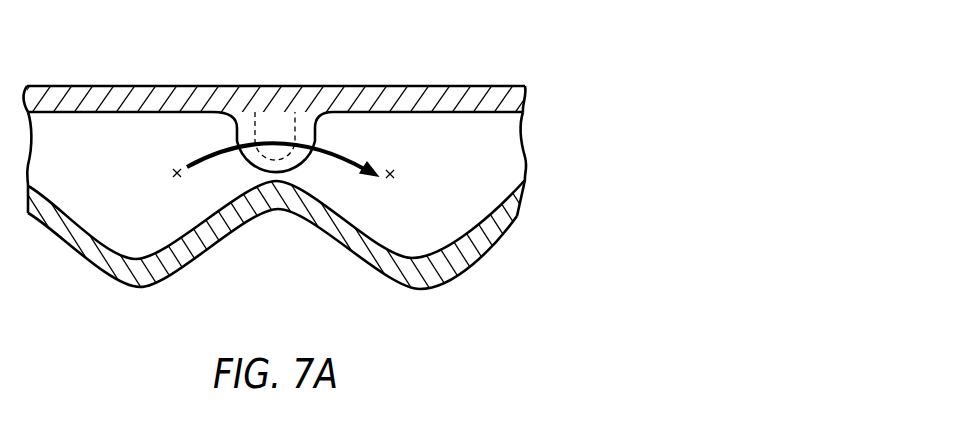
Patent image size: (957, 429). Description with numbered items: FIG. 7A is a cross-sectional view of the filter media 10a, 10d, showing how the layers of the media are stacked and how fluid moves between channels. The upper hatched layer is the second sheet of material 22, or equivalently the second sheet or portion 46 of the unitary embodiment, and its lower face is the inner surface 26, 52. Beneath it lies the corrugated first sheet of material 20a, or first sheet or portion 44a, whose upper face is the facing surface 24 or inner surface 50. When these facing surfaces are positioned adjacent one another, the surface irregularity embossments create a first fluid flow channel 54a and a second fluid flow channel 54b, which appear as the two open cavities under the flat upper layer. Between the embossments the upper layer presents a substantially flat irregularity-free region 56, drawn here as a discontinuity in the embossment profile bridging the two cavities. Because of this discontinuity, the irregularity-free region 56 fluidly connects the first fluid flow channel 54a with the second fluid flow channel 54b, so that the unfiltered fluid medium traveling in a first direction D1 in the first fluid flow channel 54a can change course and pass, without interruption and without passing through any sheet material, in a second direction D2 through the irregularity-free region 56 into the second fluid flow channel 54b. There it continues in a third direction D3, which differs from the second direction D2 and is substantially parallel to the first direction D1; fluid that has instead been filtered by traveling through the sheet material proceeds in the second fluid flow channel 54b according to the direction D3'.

The filter media 10a is at (328, 168).
The filter media 10d is at (457, 47).
The second sheet of material 22 is at (326, 96).
The second sheet or portion 46 is at (508, 100).
The inner surface 26 is at (321, 133).
The inner surface 52 is at (499, 113).
The facing surface 24 is at (320, 210).
The inner surface 50 is at (505, 196).
The first sheet of material 20a is at (328, 235).
The first sheet or portion 44a is at (510, 204).
The irregularity-free region 56 is at (333, 77).
The first fluid flow channel 54a is at (109, 179).
The second fluid flow channel 54b is at (454, 179).
The first direction D1 is at (177, 173).
The second direction D2 is at (282, 153).
The third direction D3 is at (489, 253).
The direction D3' is at (489, 253).